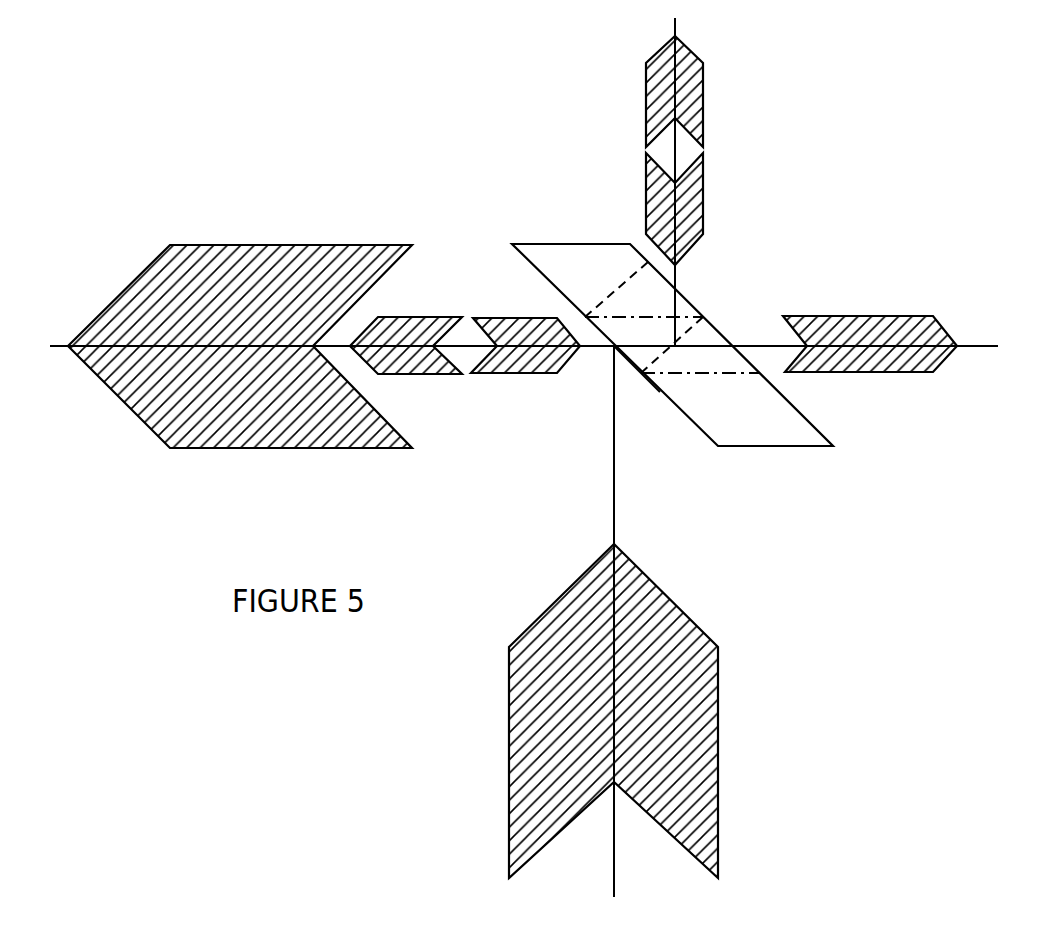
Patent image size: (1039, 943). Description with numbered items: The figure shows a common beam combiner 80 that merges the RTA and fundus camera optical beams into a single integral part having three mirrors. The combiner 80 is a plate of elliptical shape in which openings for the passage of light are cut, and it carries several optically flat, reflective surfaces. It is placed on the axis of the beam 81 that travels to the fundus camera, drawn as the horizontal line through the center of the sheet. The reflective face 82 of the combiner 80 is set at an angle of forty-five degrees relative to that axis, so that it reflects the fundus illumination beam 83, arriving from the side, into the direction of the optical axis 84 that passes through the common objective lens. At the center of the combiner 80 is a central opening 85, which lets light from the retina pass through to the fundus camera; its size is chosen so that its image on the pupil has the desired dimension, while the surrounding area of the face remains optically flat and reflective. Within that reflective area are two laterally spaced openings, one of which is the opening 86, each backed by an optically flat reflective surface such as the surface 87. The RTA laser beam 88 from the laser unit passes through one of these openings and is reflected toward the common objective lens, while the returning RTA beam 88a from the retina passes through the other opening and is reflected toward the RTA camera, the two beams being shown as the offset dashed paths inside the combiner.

The combiner 80 is at (802, 432).
The beam 81 is at (907, 374).
The reflective face 82 is at (690, 420).
The fundus illumination beam 83 is at (308, 245).
The optical axis 84 is at (58, 349).
The central opening 85 is at (643, 356).
The opening 86 is at (697, 276).
The optically flat reflective surface 87 is at (731, 328).
The RTA laser beam 88 is at (420, 327).
The returning RTA beam 88a is at (520, 328).